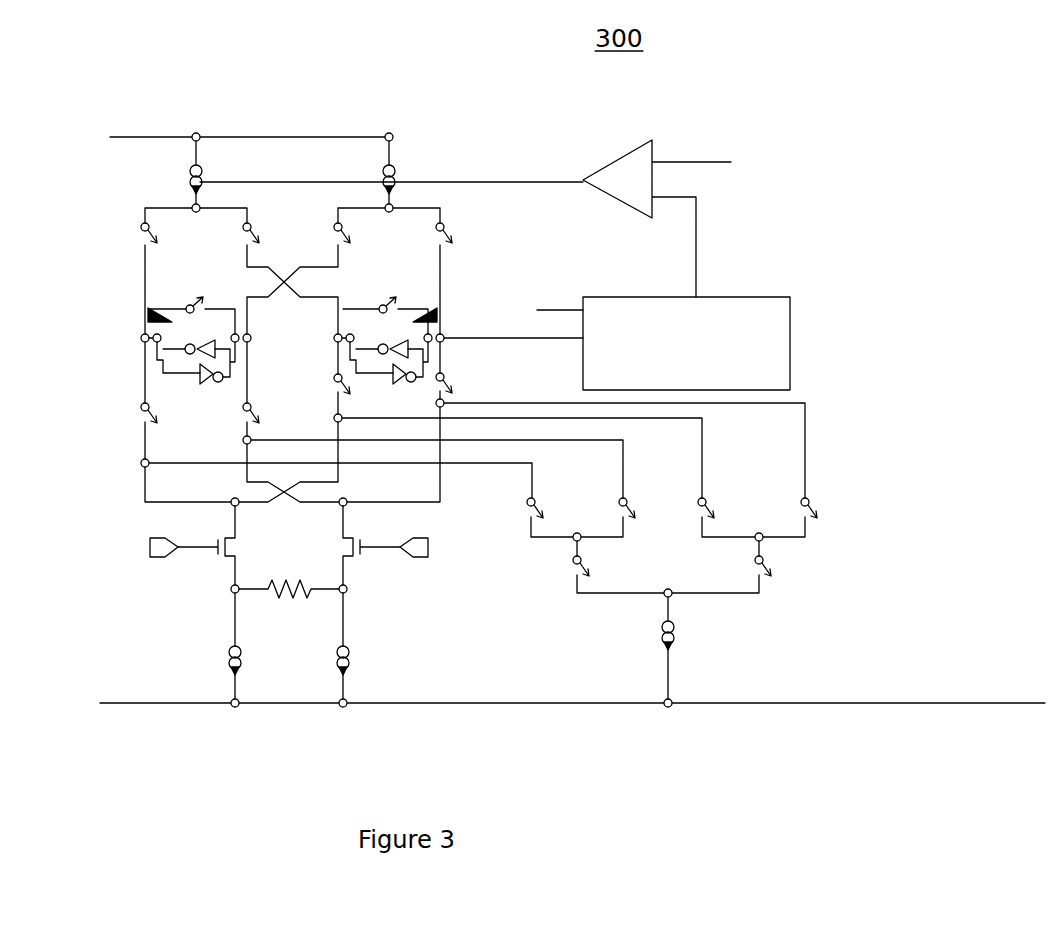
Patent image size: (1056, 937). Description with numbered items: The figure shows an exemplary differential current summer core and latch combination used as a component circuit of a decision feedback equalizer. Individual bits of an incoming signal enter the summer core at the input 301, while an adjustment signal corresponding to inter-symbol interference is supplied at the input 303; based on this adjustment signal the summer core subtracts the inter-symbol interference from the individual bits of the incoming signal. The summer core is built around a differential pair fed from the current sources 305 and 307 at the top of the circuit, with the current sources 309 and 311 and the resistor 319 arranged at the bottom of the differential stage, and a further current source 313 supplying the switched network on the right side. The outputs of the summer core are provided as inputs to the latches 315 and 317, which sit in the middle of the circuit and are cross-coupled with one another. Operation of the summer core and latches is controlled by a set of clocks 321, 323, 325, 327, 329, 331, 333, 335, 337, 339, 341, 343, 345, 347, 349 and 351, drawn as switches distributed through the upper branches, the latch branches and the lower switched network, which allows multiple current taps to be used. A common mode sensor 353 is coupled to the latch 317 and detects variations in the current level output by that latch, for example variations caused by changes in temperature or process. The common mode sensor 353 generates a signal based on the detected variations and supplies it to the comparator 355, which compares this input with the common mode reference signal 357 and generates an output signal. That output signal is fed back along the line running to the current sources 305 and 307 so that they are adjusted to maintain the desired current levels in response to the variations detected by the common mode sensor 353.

The input 301 is at (145, 549).
The input 303 is at (432, 549).
The current source 305 is at (178, 174).
The current source 307 is at (398, 173).
The current source 309 is at (222, 664).
The current source 311 is at (355, 665).
The current source 313 is at (679, 643).
The latch 315 is at (150, 313).
The latch 317 is at (440, 320).
The resistor 319 is at (291, 572).
The clock 321 is at (156, 241).
The clock 323 is at (264, 240).
The clock 325 is at (355, 240).
The clock 327 is at (462, 239).
The clock 329 is at (207, 299).
The clock 331 is at (400, 299).
The clock 333 is at (133, 422).
The clock 335 is at (236, 422).
The clock 337 is at (335, 390).
The clock 339 is at (460, 385).
The clock 341 is at (526, 514).
The clock 343 is at (614, 514).
The clock 345 is at (714, 514).
The clock 347 is at (822, 514).
The clock 349 is at (589, 570).
The clock 351 is at (777, 571).
The common mode sensor 353 is at (701, 324).
The comparator 355 is at (643, 190).
The common mode reference signal 357 is at (700, 165).